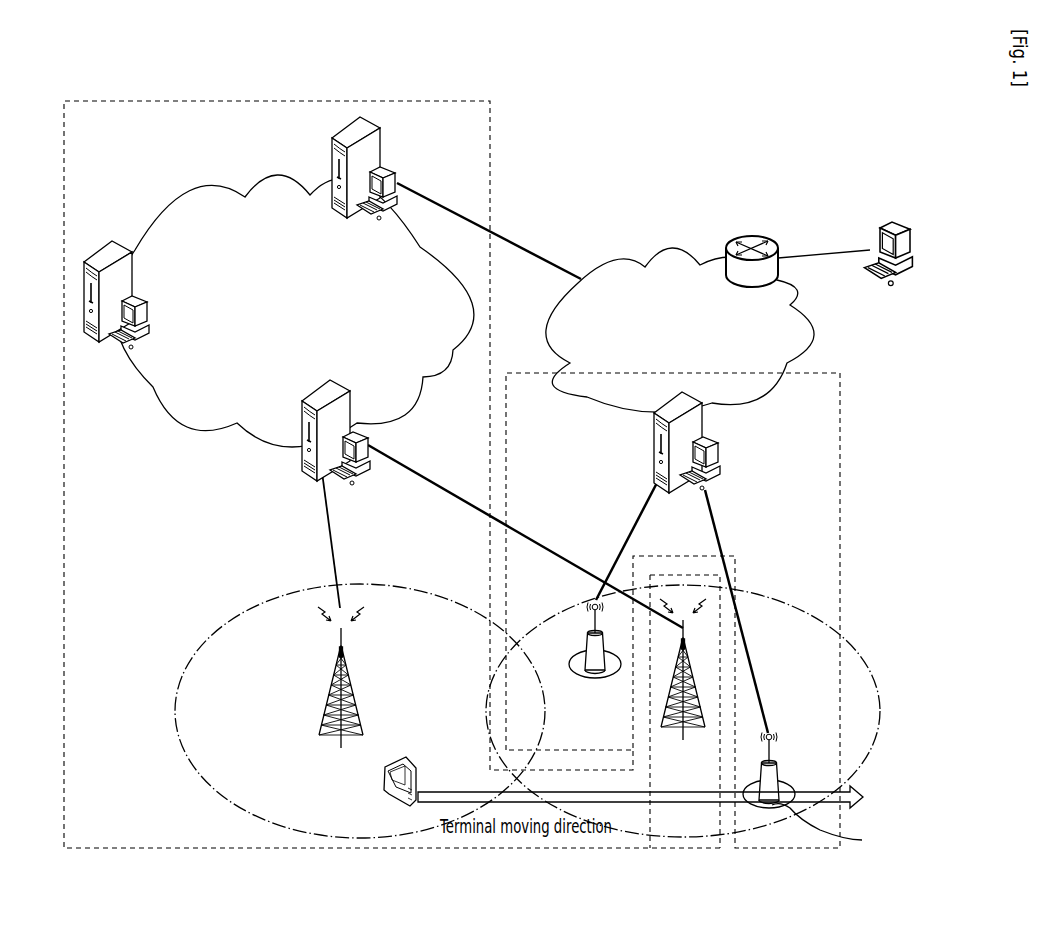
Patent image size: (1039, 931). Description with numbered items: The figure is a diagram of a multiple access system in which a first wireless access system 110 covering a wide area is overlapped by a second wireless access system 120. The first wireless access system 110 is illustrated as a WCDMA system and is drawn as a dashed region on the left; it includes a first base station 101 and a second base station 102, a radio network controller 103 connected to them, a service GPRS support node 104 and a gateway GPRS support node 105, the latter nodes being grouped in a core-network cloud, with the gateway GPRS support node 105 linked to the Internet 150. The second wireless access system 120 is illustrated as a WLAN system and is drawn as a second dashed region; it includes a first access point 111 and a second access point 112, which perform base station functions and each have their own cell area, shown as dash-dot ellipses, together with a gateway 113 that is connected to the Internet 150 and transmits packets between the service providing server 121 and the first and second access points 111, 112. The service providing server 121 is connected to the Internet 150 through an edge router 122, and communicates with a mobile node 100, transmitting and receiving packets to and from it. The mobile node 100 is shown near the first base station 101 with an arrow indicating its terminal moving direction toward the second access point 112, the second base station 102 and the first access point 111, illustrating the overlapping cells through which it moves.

The mobile node 100 is at (396, 765).
The first base station 101 is at (327, 691).
The second base station 102 is at (699, 703).
The radio network controller 103 is at (313, 470).
The service general packet radio service support node 104 is at (84, 303).
The gateway general packet radio service support node 105 is at (351, 118).
The first wireless access system 110 is at (277, 100).
The first access point 111 is at (778, 763).
The second access point 112 is at (583, 643).
The gateway 113 is at (722, 450).
The second wireless access system 120 is at (841, 425).
The service providing server 121 is at (902, 214).
The edge router 122 is at (740, 228).
The Internet 150 is at (680, 330).